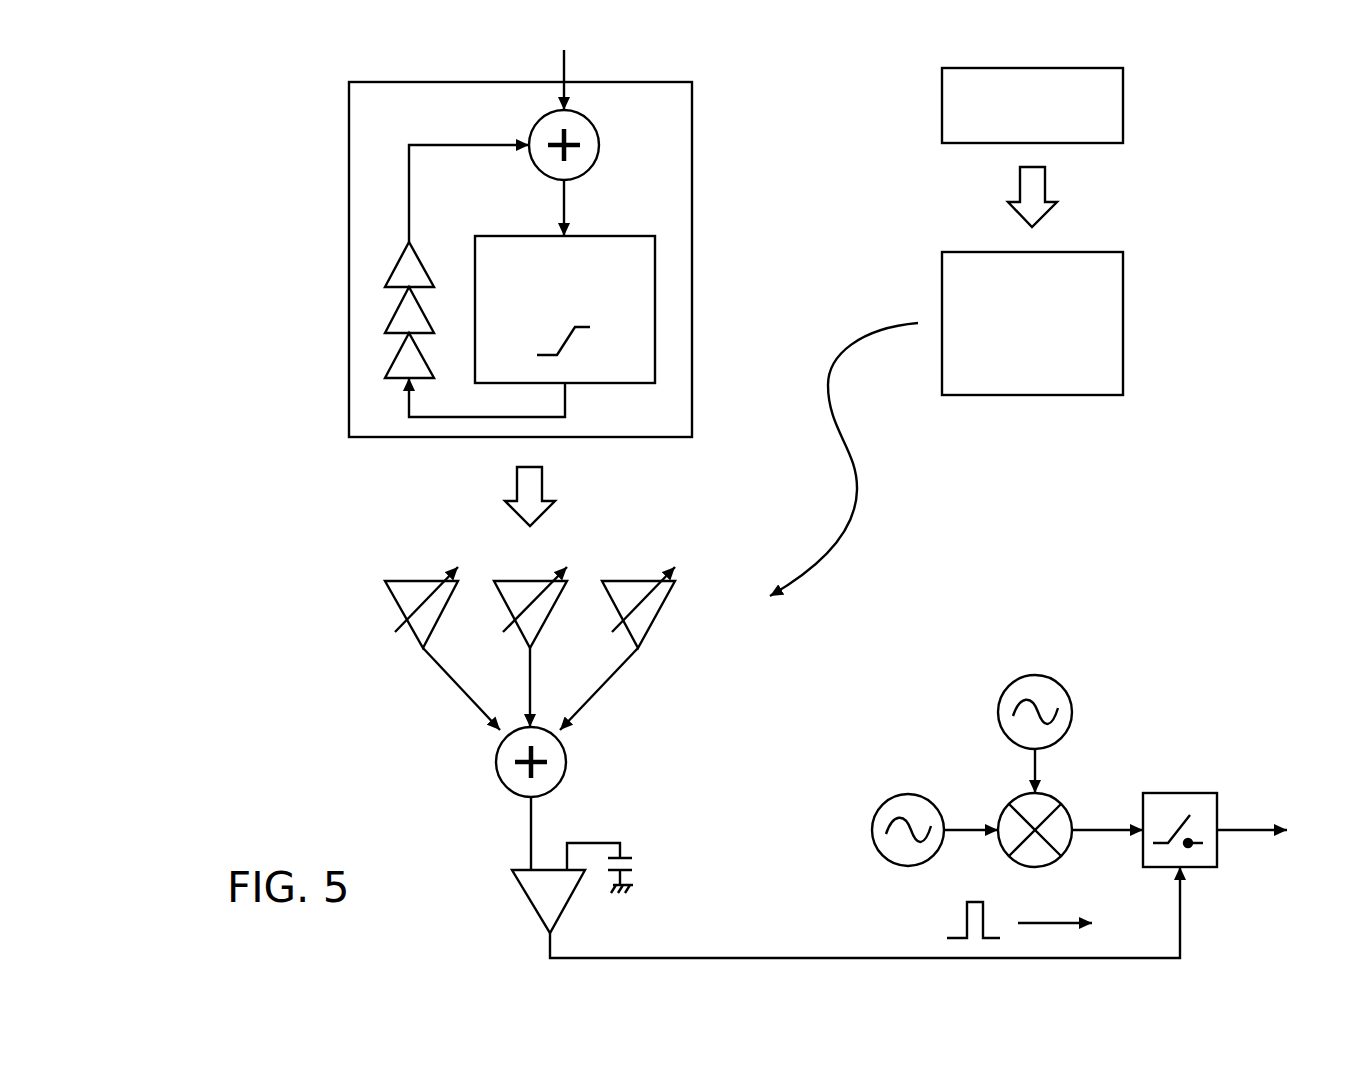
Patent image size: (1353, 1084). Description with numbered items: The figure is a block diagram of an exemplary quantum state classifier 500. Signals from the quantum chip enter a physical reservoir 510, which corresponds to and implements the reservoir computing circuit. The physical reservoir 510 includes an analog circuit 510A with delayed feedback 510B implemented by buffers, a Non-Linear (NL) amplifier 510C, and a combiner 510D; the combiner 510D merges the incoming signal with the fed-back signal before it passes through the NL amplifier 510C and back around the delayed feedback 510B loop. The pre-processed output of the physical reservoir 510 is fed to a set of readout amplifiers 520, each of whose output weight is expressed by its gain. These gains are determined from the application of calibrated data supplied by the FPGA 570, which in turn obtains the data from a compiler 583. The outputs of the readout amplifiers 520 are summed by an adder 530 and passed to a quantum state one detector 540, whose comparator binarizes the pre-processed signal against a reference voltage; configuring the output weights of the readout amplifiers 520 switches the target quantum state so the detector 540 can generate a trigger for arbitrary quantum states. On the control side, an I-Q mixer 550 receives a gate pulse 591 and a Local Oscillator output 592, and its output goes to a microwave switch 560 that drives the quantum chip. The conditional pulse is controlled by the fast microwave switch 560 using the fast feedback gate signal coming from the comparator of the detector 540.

The quantum state classifier 500 is at (177, 173).
The physical reservoir 510 is at (345, 78).
The analog circuit 510A is at (362, 110).
The delayed feedback 510B is at (385, 255).
The Non-Linear (NL) amplifier 510C is at (540, 304).
The combiner 510D is at (597, 145).
The readout amplifiers 520 is at (516, 607).
The adder 530 is at (555, 762).
The quantum state '1' detector 540 is at (495, 840).
The I-Q mixer 550 is at (1035, 843).
The microwave switch 560 is at (1180, 815).
The Field Programmable Gate Array (FPGA) 570 is at (1012, 352).
The compiler 583 is at (1012, 134).
The gate pulse 591 is at (1035, 698).
The Local Oscillator (LO) output 592 is at (882, 830).